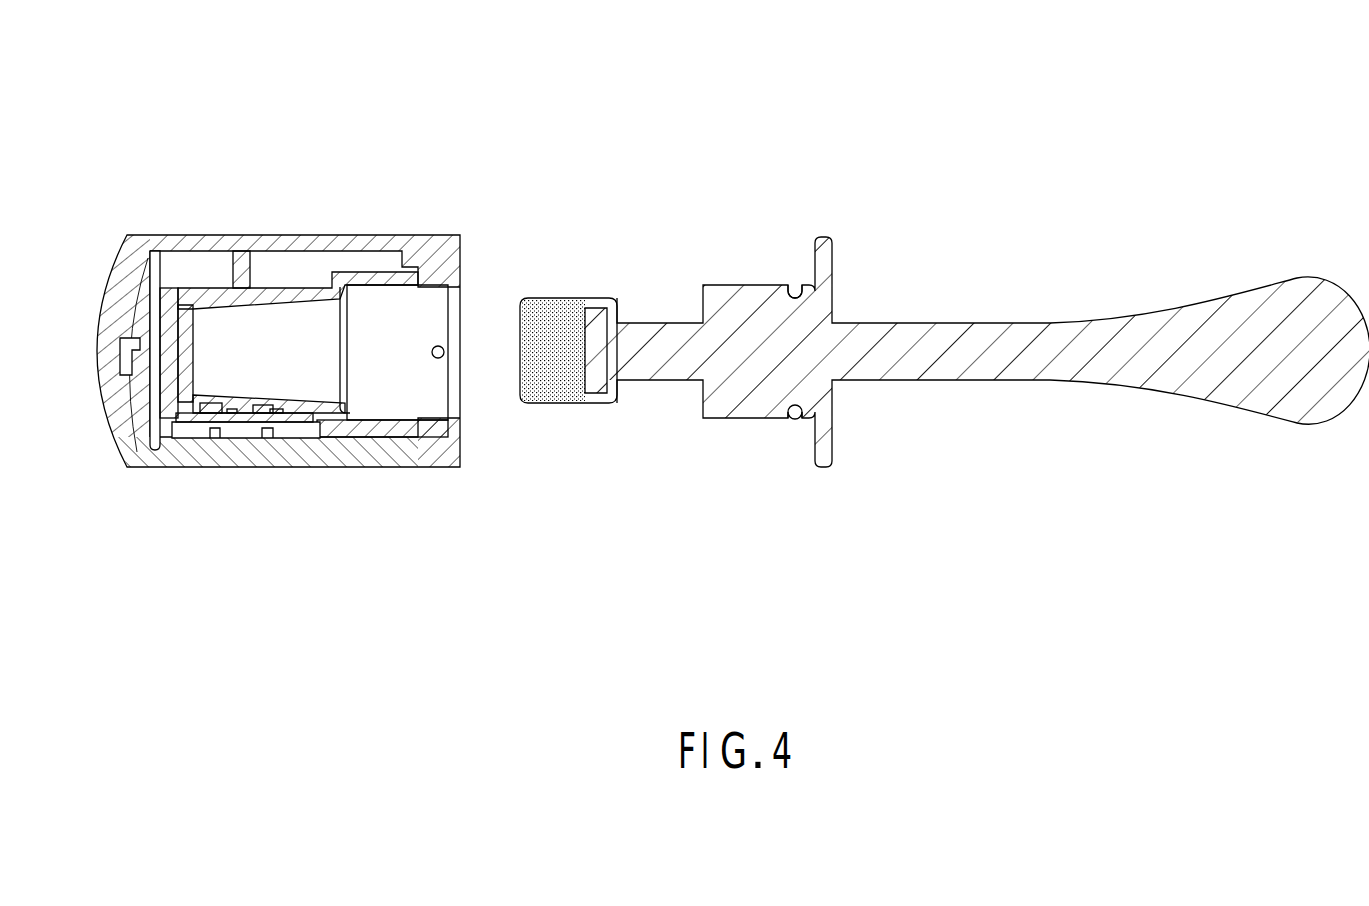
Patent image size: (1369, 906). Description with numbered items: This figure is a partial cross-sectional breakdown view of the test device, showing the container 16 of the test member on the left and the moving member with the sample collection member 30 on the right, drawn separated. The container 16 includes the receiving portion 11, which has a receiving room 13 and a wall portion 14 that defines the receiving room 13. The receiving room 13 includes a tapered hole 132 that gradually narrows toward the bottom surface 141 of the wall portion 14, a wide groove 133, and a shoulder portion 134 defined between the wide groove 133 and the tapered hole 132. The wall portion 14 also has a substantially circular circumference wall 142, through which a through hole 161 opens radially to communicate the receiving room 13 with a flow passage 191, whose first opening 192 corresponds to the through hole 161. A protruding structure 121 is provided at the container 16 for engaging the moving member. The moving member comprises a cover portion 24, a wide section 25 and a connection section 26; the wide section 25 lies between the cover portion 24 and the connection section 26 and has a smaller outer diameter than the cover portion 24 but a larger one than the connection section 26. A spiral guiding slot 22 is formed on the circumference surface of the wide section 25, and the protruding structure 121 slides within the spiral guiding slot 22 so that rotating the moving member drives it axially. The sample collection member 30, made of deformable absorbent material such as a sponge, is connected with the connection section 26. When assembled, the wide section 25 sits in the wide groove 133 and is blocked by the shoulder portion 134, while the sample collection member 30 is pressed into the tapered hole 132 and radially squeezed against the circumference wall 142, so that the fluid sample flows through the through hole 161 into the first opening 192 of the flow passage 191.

The receiving portion 11 is at (383, 96).
The receiving room 13 is at (452, 153).
The wall portion 14 is at (165, 153).
The bottom surface 141 is at (170, 325).
The circumference wall 142 is at (228, 307).
The tapered hole 132 is at (308, 323).
The shoulder portion 134 is at (360, 303).
The wide groove 133 is at (427, 303).
The protruding structure 121 is at (443, 347).
The container 16 is at (147, 425).
The through hole 161 is at (243, 424).
The flow passage 191 is at (252, 425).
The first opening 192 is at (200, 418).
The sample collection member 30 is at (562, 303).
The connection section 26 is at (645, 327).
The wide section 25 is at (745, 292).
The spiral guiding slot 22 is at (795, 285).
The cover portion 24 is at (828, 256).